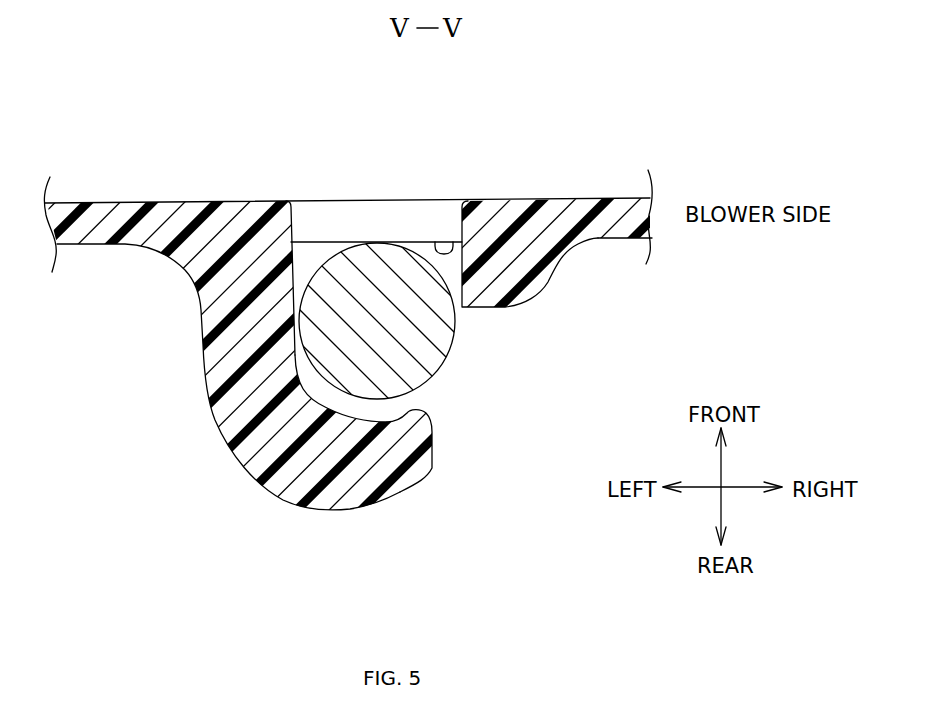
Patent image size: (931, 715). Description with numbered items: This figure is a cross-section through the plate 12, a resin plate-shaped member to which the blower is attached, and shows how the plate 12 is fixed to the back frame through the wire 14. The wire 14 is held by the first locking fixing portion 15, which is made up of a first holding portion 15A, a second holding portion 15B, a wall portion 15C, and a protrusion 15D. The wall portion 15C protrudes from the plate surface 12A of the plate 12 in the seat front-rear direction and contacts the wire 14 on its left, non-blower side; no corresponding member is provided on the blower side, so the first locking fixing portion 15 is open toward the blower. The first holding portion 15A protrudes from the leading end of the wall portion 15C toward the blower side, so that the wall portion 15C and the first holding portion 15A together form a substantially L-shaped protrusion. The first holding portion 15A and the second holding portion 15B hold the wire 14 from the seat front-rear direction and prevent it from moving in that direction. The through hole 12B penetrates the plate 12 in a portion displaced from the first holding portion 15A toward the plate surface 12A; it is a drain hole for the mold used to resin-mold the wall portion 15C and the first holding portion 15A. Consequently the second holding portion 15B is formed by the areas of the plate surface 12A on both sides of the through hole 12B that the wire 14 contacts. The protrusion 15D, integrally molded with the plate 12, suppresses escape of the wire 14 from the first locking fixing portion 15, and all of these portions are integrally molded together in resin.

The plate 12 is at (105, 203).
The plate surface 12A is at (83, 246).
The through hole 12B is at (373, 210).
The wire 14 is at (443, 360).
The first locking fixing portion 15 is at (205, 445).
The first holding portion 15A is at (407, 482).
The second holding portion 15B is at (435, 250).
The wall portion 15C is at (313, 268).
The protrusion 15D is at (527, 295).